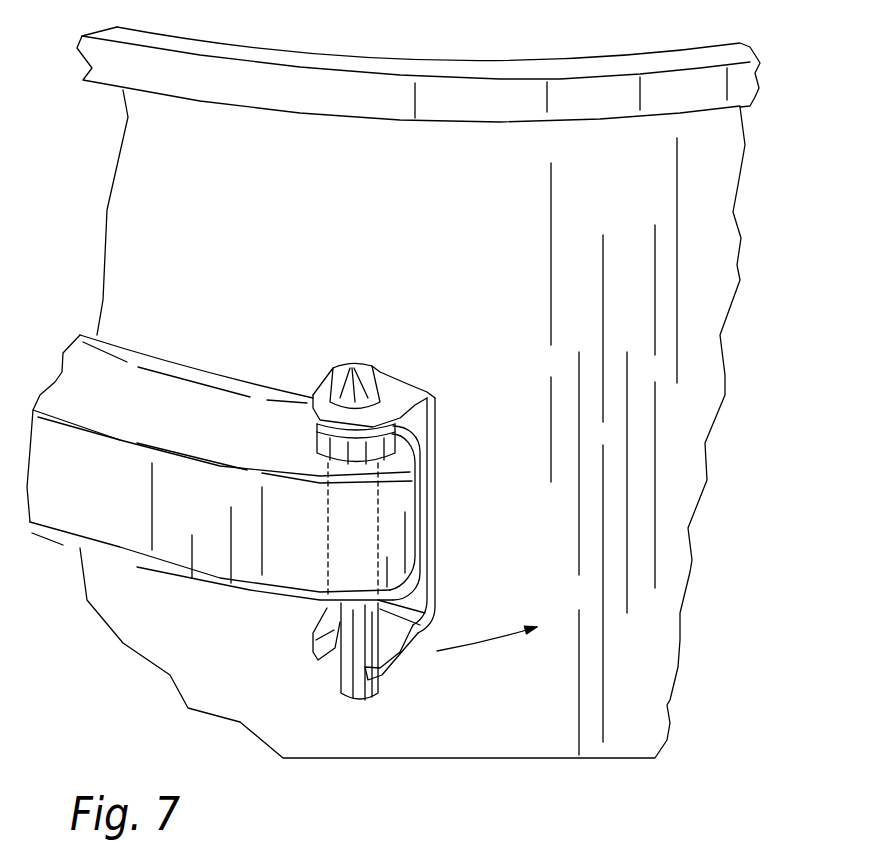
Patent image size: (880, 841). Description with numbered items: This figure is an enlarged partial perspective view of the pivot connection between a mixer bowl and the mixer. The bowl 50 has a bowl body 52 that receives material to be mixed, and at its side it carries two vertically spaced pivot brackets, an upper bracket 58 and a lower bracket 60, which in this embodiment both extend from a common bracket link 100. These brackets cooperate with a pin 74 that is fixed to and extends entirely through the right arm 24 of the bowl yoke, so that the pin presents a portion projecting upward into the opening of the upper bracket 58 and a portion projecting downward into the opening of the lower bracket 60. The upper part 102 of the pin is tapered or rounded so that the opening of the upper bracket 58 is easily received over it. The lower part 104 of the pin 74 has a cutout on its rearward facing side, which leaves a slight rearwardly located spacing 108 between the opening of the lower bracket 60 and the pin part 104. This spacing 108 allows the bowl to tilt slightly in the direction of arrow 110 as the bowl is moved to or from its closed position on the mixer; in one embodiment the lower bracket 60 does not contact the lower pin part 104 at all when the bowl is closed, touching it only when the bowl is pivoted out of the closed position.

The arm 24 is at (80, 505).
The bowl 50 is at (522, 58).
The bowl body 52 is at (626, 642).
The upper bracket 58 is at (317, 400).
The lower bracket 60 is at (393, 665).
The pin 74 is at (364, 362).
The bracket link 100 is at (437, 497).
The upper part of pin 102 is at (390, 368).
The lower part of pin 104 is at (348, 693).
The spacing 108 is at (322, 672).
The arrow 110 is at (480, 648).